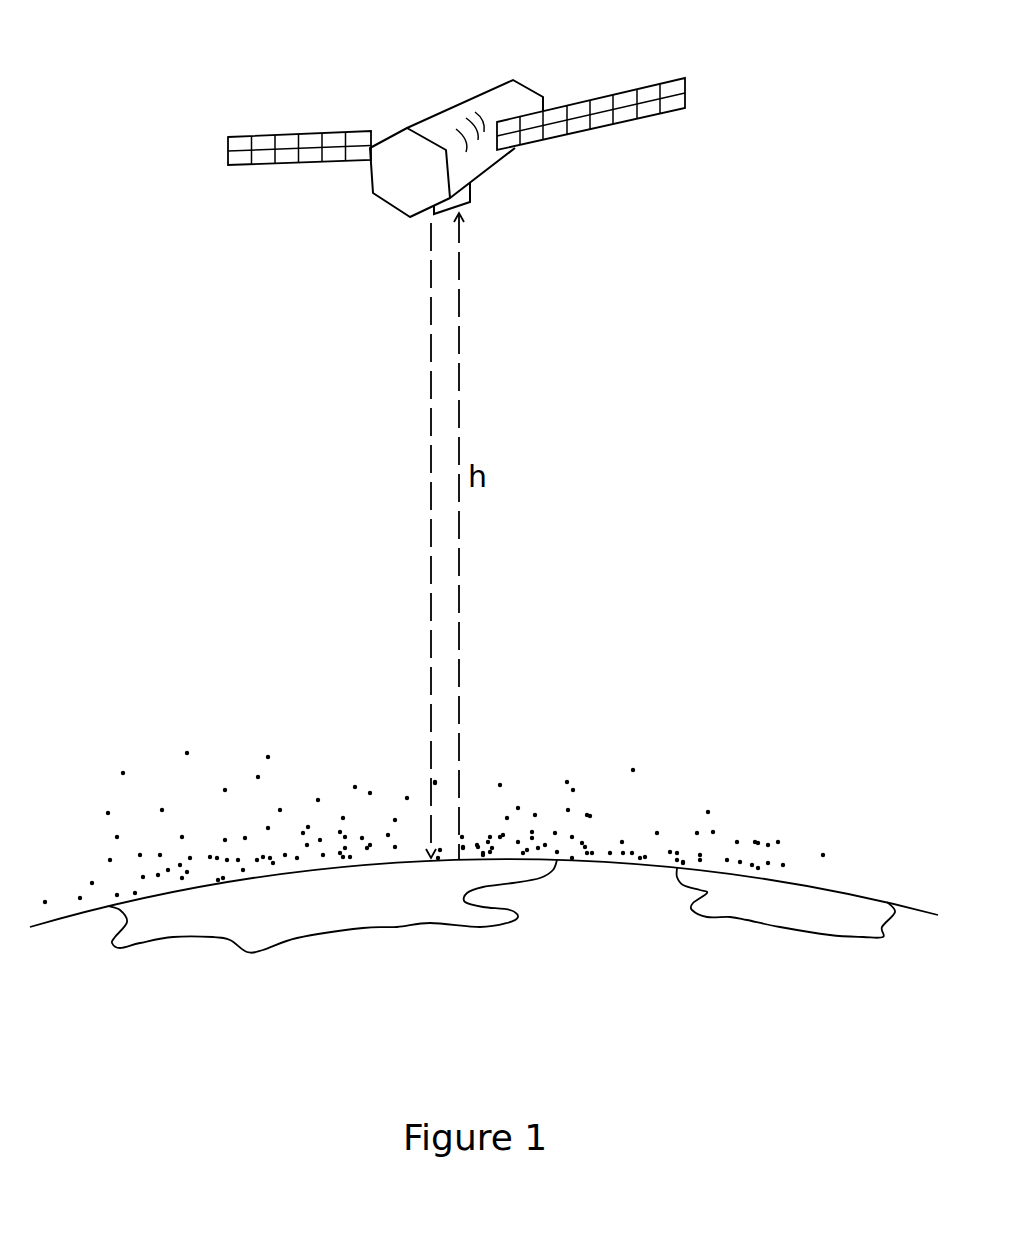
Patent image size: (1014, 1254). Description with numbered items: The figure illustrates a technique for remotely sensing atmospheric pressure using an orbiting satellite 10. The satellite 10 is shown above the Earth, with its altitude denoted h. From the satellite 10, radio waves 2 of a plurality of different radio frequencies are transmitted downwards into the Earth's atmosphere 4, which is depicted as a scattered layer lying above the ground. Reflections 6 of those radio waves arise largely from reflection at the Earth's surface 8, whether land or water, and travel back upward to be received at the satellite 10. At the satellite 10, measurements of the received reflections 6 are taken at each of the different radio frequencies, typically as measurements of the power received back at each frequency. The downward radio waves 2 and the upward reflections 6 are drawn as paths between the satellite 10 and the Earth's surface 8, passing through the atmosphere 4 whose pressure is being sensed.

The orbiting satellite 10 is at (450, 107).
The radio waves 2 is at (432, 610).
The reflections 6 is at (459, 573).
The Earth's atmosphere 4 is at (533, 800).
The Earth's surface 8 is at (447, 862).